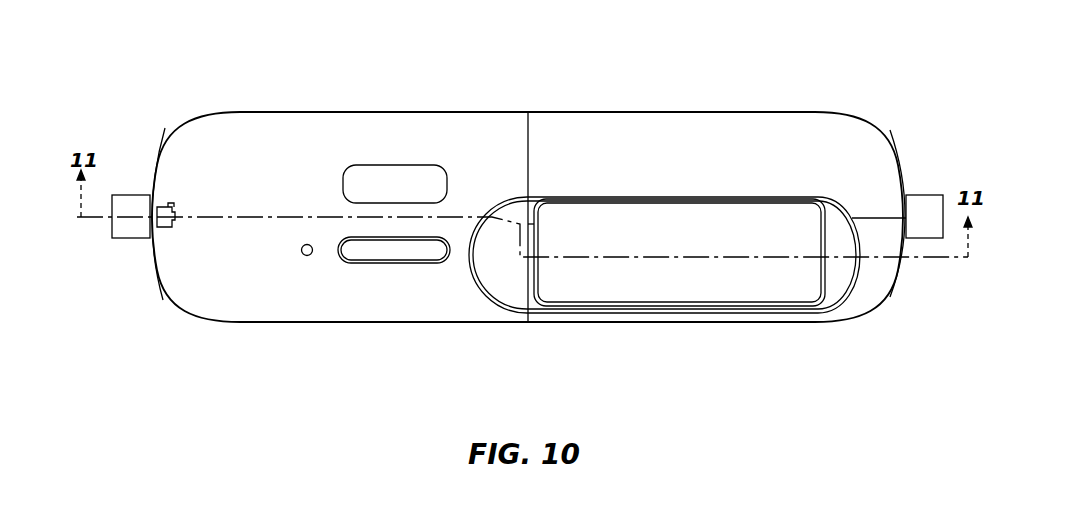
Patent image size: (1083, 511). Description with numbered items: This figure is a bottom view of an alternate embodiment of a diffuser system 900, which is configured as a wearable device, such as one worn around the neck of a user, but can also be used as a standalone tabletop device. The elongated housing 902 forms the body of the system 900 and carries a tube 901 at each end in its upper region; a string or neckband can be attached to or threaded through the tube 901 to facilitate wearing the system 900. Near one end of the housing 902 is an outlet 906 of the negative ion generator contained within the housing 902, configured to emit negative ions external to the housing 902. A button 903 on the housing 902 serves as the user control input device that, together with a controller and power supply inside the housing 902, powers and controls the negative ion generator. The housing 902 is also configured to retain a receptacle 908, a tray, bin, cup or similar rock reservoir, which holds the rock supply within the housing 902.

The diffuser system 900 is at (167, 322).
The tube 901 is at (133, 202).
The housing 902 is at (233, 127).
The button 903 is at (382, 253).
The outlet 906 is at (167, 230).
The receptacle 908 is at (582, 287).